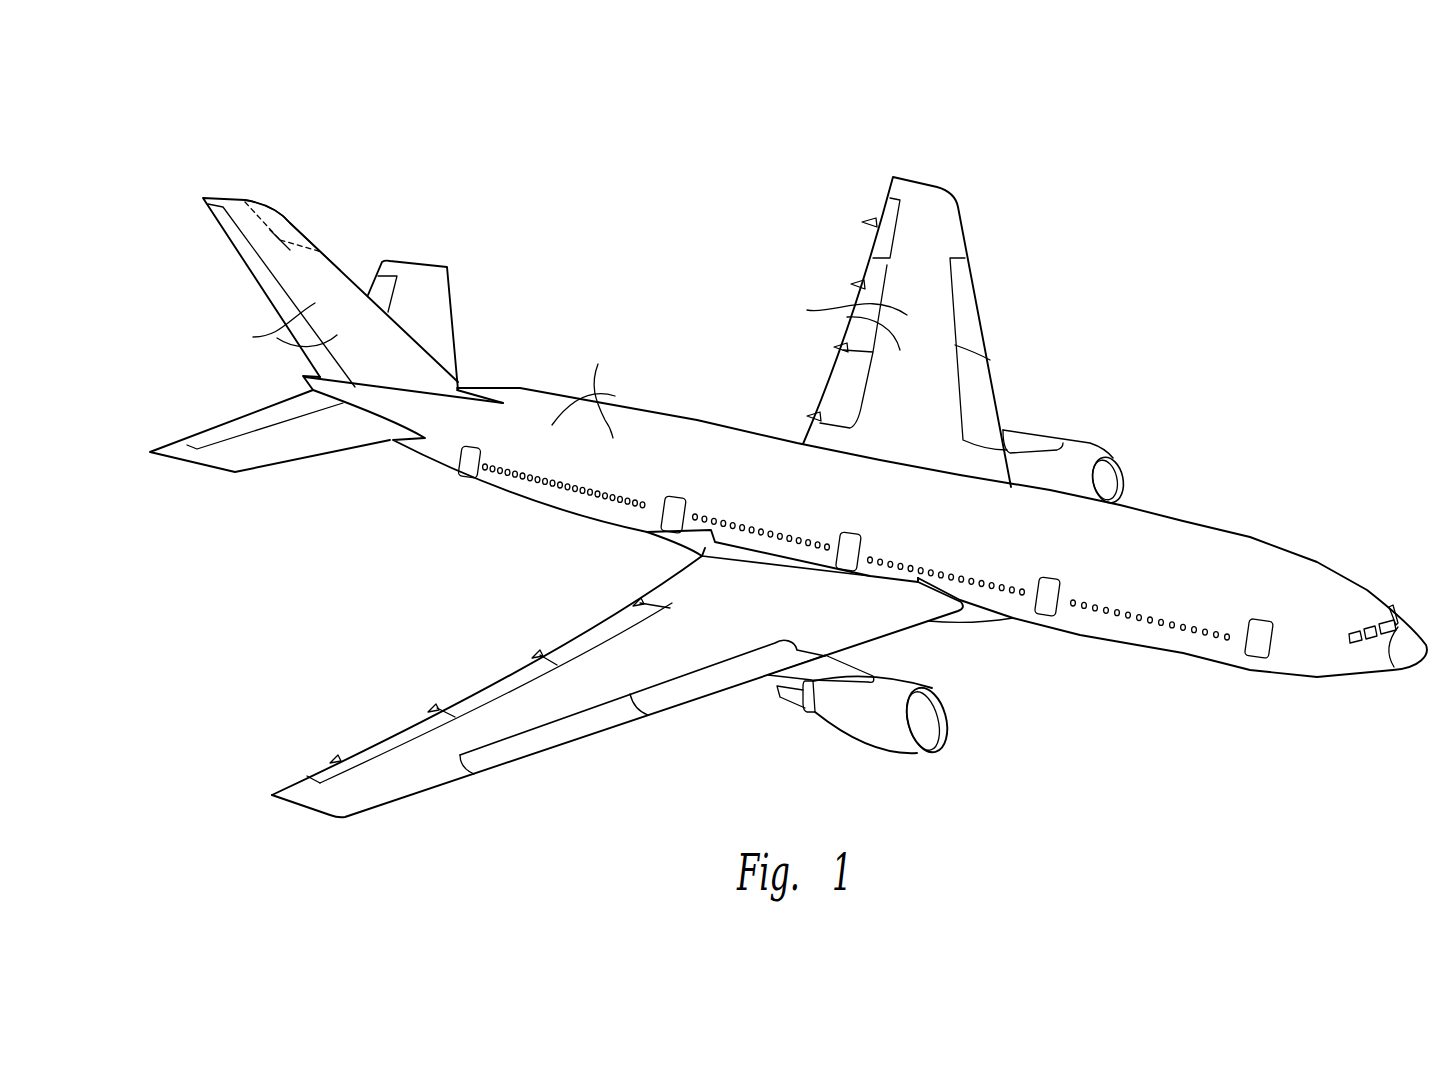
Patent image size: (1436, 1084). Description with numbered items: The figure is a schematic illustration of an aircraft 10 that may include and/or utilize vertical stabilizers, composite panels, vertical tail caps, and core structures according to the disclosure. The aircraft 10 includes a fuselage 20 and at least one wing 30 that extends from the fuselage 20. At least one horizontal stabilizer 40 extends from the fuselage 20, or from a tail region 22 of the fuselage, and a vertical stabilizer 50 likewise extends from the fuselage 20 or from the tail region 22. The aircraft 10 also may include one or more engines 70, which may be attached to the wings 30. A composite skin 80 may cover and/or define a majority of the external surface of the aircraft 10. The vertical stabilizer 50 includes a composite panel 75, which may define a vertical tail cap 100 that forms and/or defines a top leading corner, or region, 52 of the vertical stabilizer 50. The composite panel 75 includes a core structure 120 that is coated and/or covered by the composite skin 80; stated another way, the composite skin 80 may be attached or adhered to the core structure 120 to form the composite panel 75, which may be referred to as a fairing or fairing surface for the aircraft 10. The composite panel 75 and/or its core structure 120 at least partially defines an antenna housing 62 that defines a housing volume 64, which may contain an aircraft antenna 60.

The aircraft 10 is at (784, 490).
The fuselage 20 is at (1153, 653).
The tail region 22 is at (388, 467).
The wing 30 is at (962, 217).
The horizontal stabilizer 40 is at (448, 263).
The vertical stabilizer 50 is at (232, 196).
The top leading corner 52 is at (316, 213).
The aircraft antenna 60 is at (258, 203).
The antenna housing 62 is at (280, 243).
The housing volume 64 is at (280, 242).
The engine 70 is at (1101, 445).
The composite panel 75 is at (565, 364).
The composite skin 80 is at (322, 268).
The vertical tail cap 100 is at (296, 250).
The core structure 120 is at (282, 222).